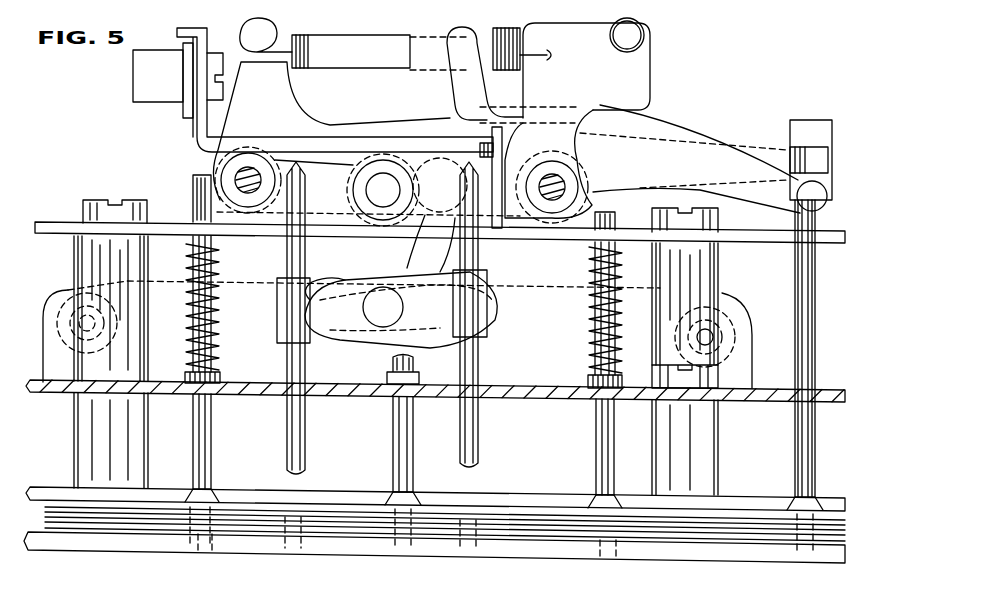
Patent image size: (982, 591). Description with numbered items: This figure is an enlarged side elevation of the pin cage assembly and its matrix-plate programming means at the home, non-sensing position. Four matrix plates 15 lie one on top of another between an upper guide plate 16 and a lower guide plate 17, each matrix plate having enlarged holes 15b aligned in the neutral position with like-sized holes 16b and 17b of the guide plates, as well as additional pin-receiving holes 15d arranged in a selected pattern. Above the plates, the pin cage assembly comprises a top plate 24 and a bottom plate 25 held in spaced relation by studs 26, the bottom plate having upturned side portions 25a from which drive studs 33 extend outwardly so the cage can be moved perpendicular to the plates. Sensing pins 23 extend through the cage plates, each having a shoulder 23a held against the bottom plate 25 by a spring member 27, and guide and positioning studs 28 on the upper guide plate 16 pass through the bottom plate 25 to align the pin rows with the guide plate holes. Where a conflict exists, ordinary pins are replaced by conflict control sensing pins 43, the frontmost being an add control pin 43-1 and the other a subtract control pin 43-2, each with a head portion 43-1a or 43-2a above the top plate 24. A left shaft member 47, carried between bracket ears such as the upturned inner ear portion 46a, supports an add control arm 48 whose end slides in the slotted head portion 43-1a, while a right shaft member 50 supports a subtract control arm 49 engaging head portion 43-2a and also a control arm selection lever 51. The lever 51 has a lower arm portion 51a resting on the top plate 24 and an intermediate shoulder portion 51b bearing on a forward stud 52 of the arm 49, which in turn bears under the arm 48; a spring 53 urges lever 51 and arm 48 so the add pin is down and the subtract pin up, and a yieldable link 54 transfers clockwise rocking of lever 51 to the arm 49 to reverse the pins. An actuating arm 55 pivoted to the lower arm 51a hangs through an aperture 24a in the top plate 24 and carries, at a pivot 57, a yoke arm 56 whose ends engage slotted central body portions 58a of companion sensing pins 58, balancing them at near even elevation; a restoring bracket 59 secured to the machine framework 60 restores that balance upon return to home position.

The matrix plates 15 is at (118, 528).
The enlarged holes 15b is at (193, 527).
The additional pin-receiving holes 15d is at (312, 538).
The upper guide plate 16 is at (532, 497).
The holes 16b is at (211, 489).
The lower guide plate 17 is at (728, 553).
The holes 17b is at (200, 546).
The sensing pins 23 is at (197, 424).
The shoulder 23a is at (218, 384).
The top plate 24 is at (62, 222).
The aperture 24a is at (349, 194).
The bottom plate 25 is at (528, 396).
The upturned side portions 25a is at (726, 296).
The studs 26 is at (140, 205).
The spring member 27 is at (216, 352).
The guide and positioning studs 28 is at (78, 430).
The drive studs 33 is at (75, 292).
The conflict control sensing pins 43 is at (812, 350).
The add control pin 43-1 is at (800, 496).
The subtract control pin 43-2 is at (811, 478).
The head portion 43-1a is at (808, 160).
The head portion 43-2a is at (815, 127).
The upturned inner ear portion 46a is at (215, 168).
The left shaft member 47 is at (250, 195).
The add control arm 48 is at (336, 114).
The subtract control arm 49 is at (458, 82).
The right shaft member 50 is at (553, 208).
The control arm selection lever 51 is at (648, 70).
The lower arm portion 51a is at (430, 212).
The intermediate shoulder portion 51b is at (458, 127).
The forward stud 52 is at (452, 165).
The spring 53 is at (352, 35).
The yieldable link 54 is at (523, 25).
The actuating arm 55 is at (407, 268).
The yoke arm 56 is at (345, 283).
The pivot 57 is at (378, 322).
The companion sensing pins 58 is at (305, 442).
The central body portion 58a is at (277, 335).
The restoring bracket 59 is at (268, 143).
The machine framework 60 is at (143, 73).